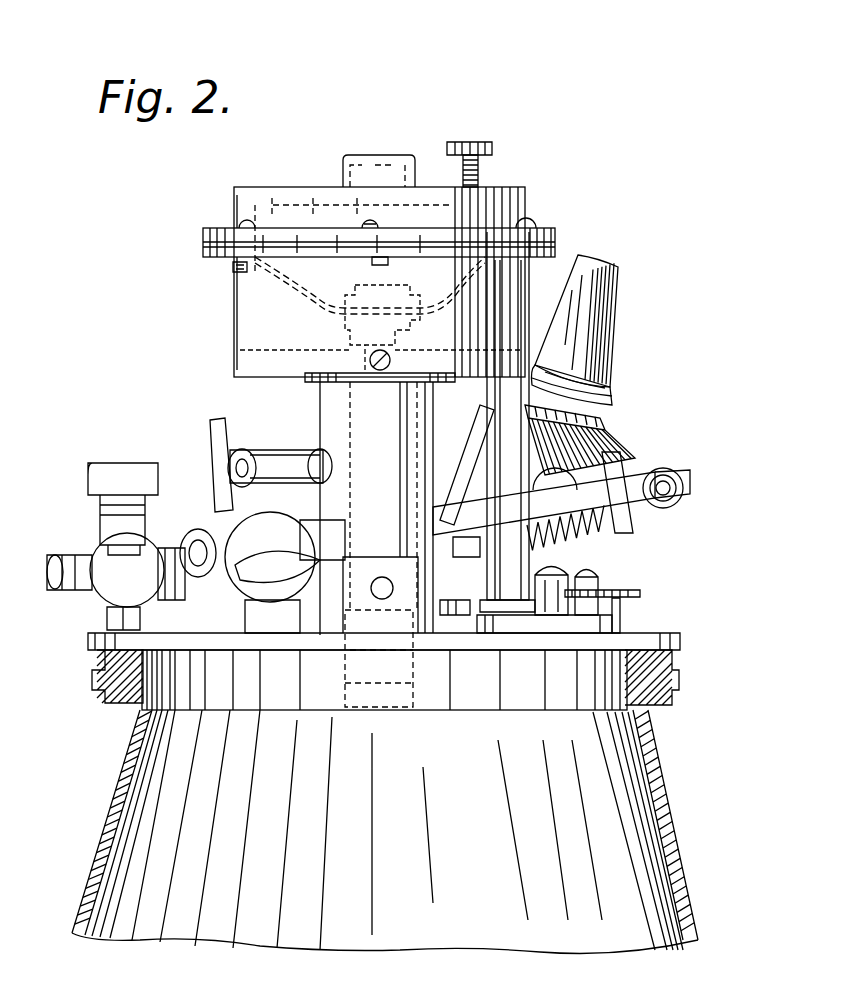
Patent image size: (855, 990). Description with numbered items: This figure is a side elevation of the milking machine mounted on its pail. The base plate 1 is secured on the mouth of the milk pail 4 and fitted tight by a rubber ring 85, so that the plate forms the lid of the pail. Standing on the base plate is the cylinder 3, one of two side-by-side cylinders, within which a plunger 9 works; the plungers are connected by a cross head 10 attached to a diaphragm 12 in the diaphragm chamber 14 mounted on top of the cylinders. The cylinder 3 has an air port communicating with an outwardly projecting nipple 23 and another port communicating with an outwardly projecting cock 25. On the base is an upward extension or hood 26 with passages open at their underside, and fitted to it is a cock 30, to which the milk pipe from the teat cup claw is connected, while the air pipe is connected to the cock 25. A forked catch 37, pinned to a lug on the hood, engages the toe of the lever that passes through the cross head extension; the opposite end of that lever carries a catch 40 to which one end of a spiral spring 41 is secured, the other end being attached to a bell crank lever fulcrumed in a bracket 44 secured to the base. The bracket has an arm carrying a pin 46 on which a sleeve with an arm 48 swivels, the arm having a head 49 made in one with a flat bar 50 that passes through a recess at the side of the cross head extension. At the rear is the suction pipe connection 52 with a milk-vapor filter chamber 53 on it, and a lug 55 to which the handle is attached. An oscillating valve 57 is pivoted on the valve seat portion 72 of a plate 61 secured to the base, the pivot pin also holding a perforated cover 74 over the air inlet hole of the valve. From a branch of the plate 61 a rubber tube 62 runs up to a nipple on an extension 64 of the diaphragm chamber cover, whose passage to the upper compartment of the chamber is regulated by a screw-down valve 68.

The base plate 1 is at (384, 680).
The cylinder 3 is at (360, 413).
The milk pail 4 is at (385, 832).
The plunger 9 is at (330, 388).
The cross head 10 is at (345, 345).
The diaphragm 12 is at (262, 282).
The diaphragm chamber 14 is at (285, 217).
The nipple 23 is at (278, 462).
The cock 25 is at (250, 540).
The upward extension or hood 26 is at (198, 548).
The cock 30 is at (110, 560).
The forked catch 37 is at (212, 430).
The catch 40 is at (382, 578).
The spiral spring 41 is at (633, 520).
The bracket 44 is at (590, 578).
The pin 46 is at (680, 485).
The arm 48 is at (640, 465).
The head 49 is at (655, 510).
The flat bar 50 is at (544, 501).
The suction pipe connection 52 is at (600, 292).
The milk-vapor filter chamber 53 is at (600, 420).
The lug 55 is at (432, 520).
The oscillating valve 57 is at (640, 592).
The plate 61 is at (612, 623).
The rubber tube 62 is at (487, 393).
The extension 64 is at (530, 205).
The screw-down valve 68 is at (468, 148).
The valve seat portion 72 is at (622, 604).
The perforated cover 74 is at (552, 580).
The rubber ring 85 is at (95, 660).